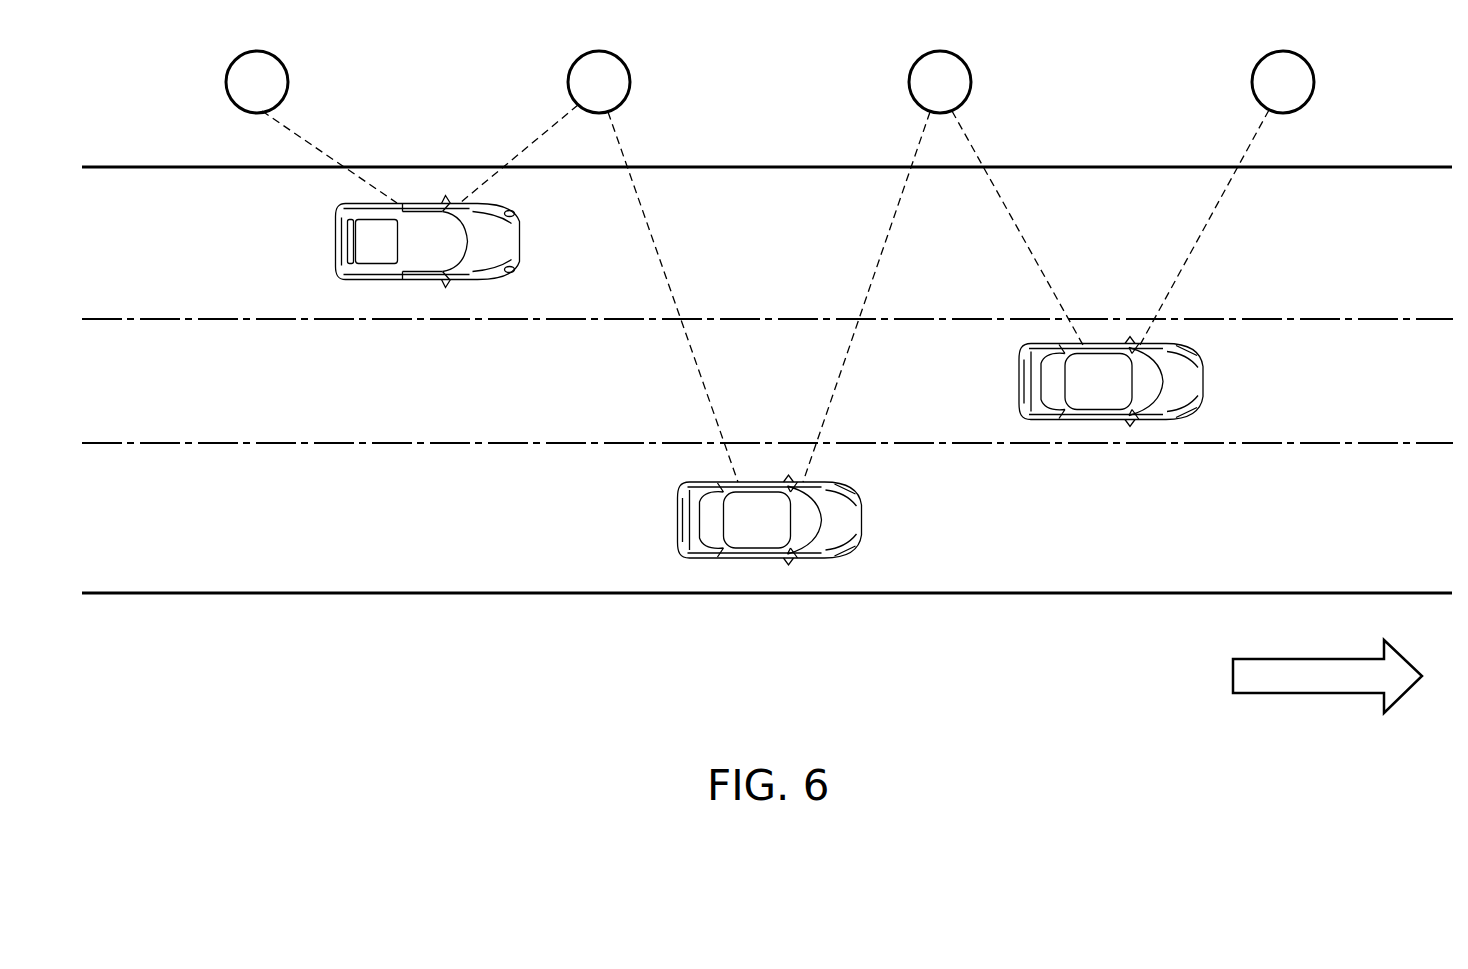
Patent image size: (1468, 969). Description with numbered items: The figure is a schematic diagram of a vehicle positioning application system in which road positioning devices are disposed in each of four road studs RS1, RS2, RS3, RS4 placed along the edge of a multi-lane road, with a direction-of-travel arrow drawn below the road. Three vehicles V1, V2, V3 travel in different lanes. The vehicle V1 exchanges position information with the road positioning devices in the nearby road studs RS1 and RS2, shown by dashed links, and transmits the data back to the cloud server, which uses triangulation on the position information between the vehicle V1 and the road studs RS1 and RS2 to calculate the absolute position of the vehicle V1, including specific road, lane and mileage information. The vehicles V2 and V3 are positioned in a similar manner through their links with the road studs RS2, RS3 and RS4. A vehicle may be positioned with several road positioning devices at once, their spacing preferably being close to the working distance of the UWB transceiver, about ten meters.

The road stud RS1 is at (288, 82).
The road stud RS2 is at (630, 82).
The road stud RS3 is at (971, 82).
The road stud RS4 is at (1314, 82).
The vehicle V1 is at (521, 243).
The vehicle V2 is at (863, 520).
The vehicle V3 is at (1204, 381).